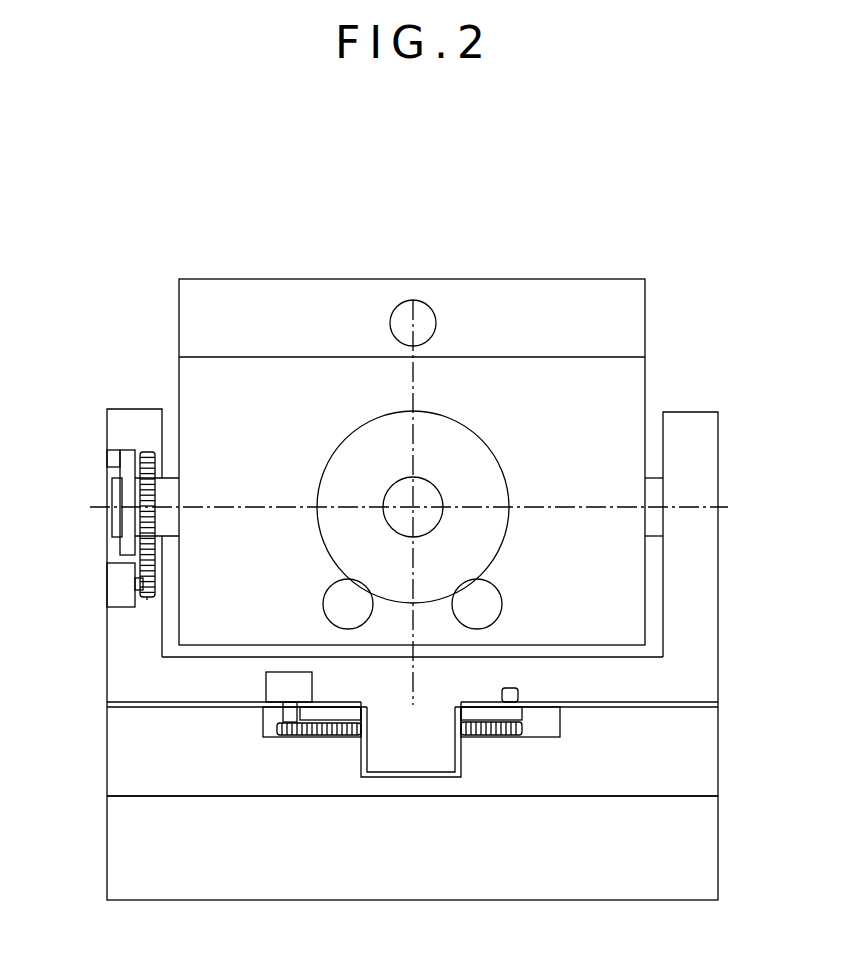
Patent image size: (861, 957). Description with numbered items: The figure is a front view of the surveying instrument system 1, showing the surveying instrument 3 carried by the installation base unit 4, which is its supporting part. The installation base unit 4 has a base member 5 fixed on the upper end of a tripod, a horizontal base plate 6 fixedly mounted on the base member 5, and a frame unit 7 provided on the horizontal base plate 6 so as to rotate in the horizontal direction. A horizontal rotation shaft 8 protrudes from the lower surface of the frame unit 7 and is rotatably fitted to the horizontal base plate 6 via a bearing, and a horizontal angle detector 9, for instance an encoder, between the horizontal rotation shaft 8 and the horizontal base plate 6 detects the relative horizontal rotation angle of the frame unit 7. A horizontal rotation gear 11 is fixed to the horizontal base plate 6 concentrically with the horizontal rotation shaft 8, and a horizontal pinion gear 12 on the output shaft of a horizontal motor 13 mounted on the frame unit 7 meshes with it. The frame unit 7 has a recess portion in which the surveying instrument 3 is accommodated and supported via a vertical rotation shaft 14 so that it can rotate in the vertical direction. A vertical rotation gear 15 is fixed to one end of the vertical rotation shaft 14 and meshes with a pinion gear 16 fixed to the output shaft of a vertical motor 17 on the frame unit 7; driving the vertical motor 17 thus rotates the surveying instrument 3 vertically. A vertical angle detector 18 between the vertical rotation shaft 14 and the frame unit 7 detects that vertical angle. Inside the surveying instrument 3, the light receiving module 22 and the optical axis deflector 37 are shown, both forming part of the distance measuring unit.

The surveying instrument system 1 is at (359, 241).
The surveying instrument 3 is at (537, 278).
The installation base unit 4 is at (104, 797).
The base member 5 is at (718, 863).
The horizontal base plate 6 is at (718, 768).
The frame unit 7 is at (695, 412).
The horizontal rotation shaft 8 is at (461, 755).
The horizontal angle detector 9 is at (529, 695).
The horizontal rotation gear 11 is at (522, 728).
The horizontal pinion gear 12 is at (278, 728).
The horizontal motor 13 is at (266, 683).
The vertical rotation shaft 14 is at (657, 478).
The vertical rotation gear 15 is at (147, 450).
The pinion gear 16 is at (150, 598).
The vertical motor 17 is at (113, 609).
The vertical angle detector 18 is at (124, 442).
The light receiving module 22 is at (437, 322).
The optical axis deflector 37 is at (505, 545).